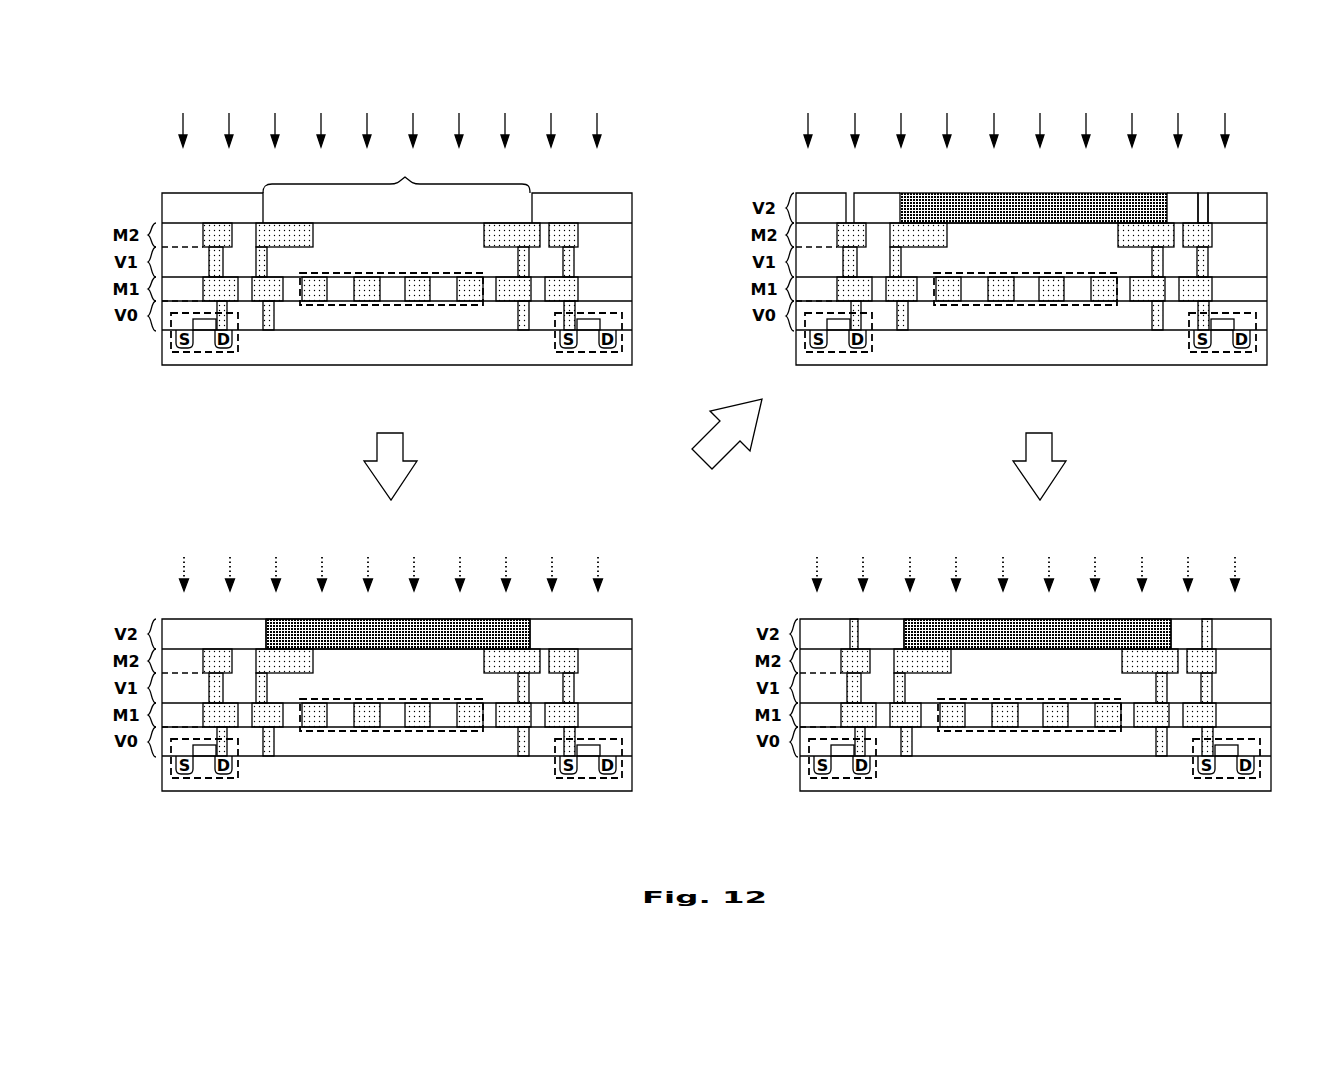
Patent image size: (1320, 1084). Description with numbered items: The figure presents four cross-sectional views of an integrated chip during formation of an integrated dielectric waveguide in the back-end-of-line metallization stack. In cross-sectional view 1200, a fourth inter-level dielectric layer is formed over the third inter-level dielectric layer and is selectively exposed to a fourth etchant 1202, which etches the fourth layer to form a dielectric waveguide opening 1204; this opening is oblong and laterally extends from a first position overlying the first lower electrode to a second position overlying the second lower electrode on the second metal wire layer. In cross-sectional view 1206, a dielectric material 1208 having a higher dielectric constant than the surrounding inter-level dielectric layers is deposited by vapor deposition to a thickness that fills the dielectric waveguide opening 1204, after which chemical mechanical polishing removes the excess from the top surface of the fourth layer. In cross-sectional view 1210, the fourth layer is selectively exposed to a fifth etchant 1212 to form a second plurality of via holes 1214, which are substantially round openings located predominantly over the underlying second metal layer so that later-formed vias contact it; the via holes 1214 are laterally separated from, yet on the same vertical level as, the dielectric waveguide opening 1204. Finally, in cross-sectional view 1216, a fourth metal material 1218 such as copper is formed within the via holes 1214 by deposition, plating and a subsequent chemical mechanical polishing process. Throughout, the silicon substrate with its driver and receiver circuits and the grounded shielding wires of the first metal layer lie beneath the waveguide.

The cross-sectional view 1200 is at (392, 209).
The fourth etchant 1202 is at (427, 130).
The dielectric waveguide opening 1204 is at (396, 174).
The cross-sectional view 1206 is at (390, 650).
The dielectric material 1208 is at (428, 574).
The cross-sectional view 1210 is at (1013, 209).
The fifth etchant 1212 is at (1053, 130).
The second plurality of via holes 1214 is at (1233, 192).
The cross-sectional view 1216 is at (1014, 649).
The fourth metal material 1218 is at (1060, 574).